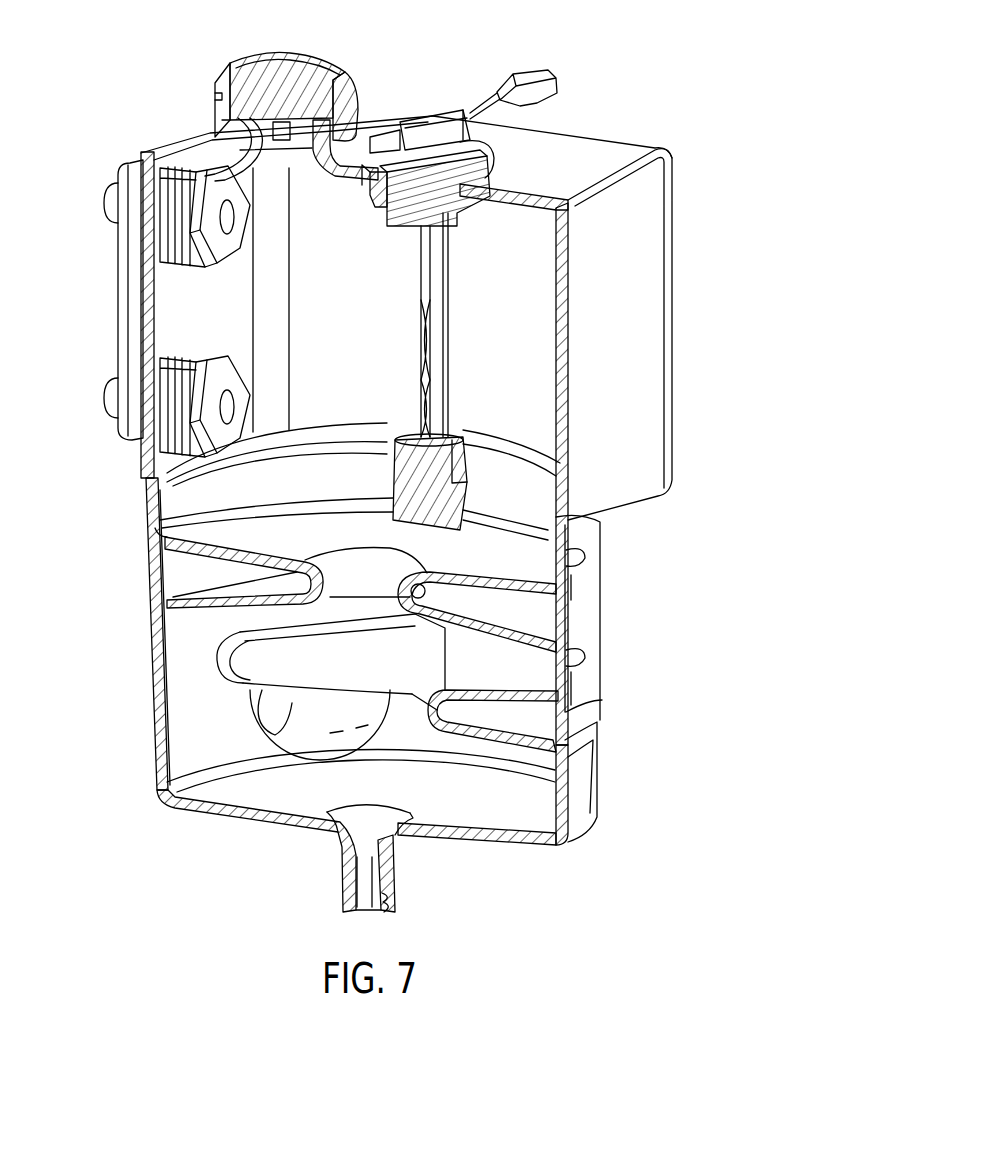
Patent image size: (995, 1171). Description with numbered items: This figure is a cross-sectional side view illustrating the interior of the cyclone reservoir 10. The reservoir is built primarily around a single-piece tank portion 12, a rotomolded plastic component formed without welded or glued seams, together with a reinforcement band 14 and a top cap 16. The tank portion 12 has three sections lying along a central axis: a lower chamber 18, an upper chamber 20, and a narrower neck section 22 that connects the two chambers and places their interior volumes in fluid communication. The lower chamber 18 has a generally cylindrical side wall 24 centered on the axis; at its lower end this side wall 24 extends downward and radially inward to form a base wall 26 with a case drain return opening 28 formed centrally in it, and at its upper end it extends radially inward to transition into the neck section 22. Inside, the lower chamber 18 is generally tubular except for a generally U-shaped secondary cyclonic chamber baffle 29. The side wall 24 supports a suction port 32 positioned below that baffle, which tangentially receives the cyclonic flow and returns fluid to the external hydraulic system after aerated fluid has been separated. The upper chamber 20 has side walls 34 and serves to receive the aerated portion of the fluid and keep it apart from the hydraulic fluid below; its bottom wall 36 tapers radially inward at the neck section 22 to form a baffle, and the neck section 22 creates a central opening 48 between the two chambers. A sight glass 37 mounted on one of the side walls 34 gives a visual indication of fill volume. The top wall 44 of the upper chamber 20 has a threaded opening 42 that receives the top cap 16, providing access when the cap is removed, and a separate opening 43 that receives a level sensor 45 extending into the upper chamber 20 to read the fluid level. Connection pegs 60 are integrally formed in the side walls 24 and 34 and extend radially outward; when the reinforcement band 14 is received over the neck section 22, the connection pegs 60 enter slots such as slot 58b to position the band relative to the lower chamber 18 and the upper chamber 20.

The cyclone reservoir 10 is at (636, 70).
The tank portion 12 is at (160, 746).
The reinforcement band 14 is at (582, 613).
The top cap 16 is at (276, 95).
The lower chamber 18 is at (563, 791).
The upper chamber 20 is at (566, 392).
The neck section 22 is at (310, 597).
The side wall 24 is at (160, 713).
The base wall 26 is at (493, 809).
The case drain return opening 28 is at (377, 885).
The secondary cyclonic chamber baffle 29 is at (483, 660).
The suction port 32 is at (290, 703).
The side walls 34 is at (564, 318).
The bottom wall 36 is at (293, 551).
The sight glass 37 is at (130, 283).
The threaded opening 42 is at (320, 110).
The opening 43 is at (385, 205).
The top wall 44 is at (505, 195).
The level sensor 45 is at (437, 213).
The central opening 48 is at (337, 562).
The slot 58b is at (571, 570).
The connection pegs 60 is at (572, 565).